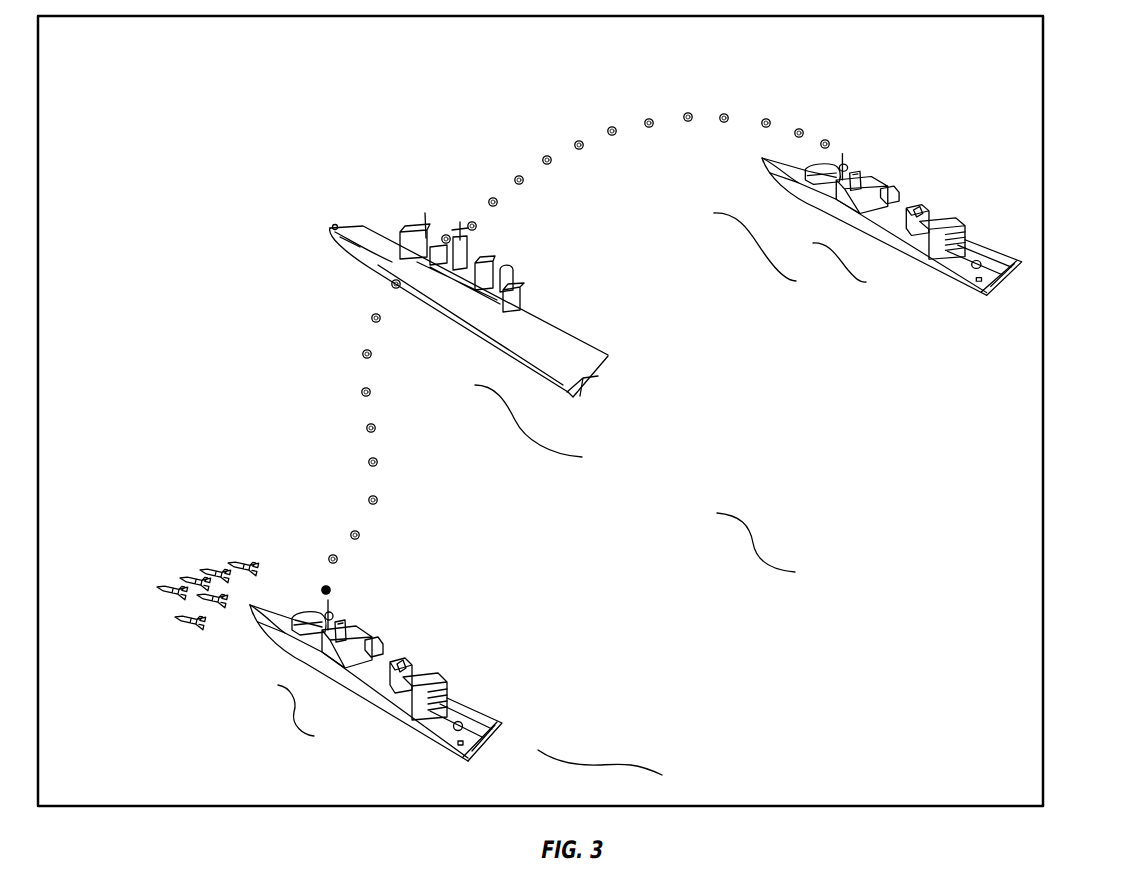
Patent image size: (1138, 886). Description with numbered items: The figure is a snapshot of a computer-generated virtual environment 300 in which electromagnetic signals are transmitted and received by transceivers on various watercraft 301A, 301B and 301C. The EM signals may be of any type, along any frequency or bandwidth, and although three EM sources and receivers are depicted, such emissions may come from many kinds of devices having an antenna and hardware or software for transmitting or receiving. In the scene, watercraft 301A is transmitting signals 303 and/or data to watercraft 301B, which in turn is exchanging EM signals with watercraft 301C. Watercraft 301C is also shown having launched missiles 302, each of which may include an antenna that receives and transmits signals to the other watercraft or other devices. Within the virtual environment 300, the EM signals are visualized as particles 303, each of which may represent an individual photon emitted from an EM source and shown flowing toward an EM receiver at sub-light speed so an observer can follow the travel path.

The computer-generated virtual environment 300 is at (1043, 40).
The watercraft 301A is at (981, 248).
The watercraft 301B is at (575, 347).
The watercraft 301C is at (482, 723).
The missiles 302 is at (212, 572).
The particles 303 is at (377, 462).